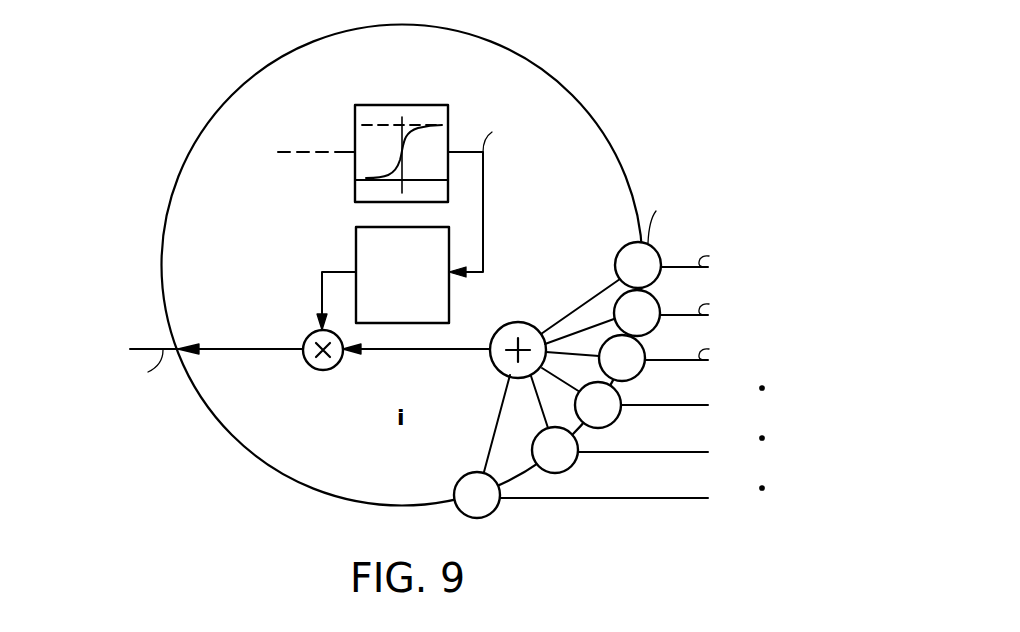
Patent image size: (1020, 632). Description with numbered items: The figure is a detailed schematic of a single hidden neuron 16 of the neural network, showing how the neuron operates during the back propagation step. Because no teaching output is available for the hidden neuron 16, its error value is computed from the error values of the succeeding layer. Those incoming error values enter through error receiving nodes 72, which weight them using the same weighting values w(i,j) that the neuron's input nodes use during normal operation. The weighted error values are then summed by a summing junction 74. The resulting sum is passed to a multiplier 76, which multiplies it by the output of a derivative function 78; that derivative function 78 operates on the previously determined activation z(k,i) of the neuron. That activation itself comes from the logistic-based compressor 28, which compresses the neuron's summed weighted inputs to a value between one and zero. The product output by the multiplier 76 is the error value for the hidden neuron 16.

The hidden neuron 16 is at (572, 92).
The logistic-based compressor 28 is at (402, 105).
The derivative function 78 is at (356, 232).
The summing junction 74 is at (520, 322).
The multiplier 76 is at (318, 370).
The error receiving nodes 72 is at (598, 428).